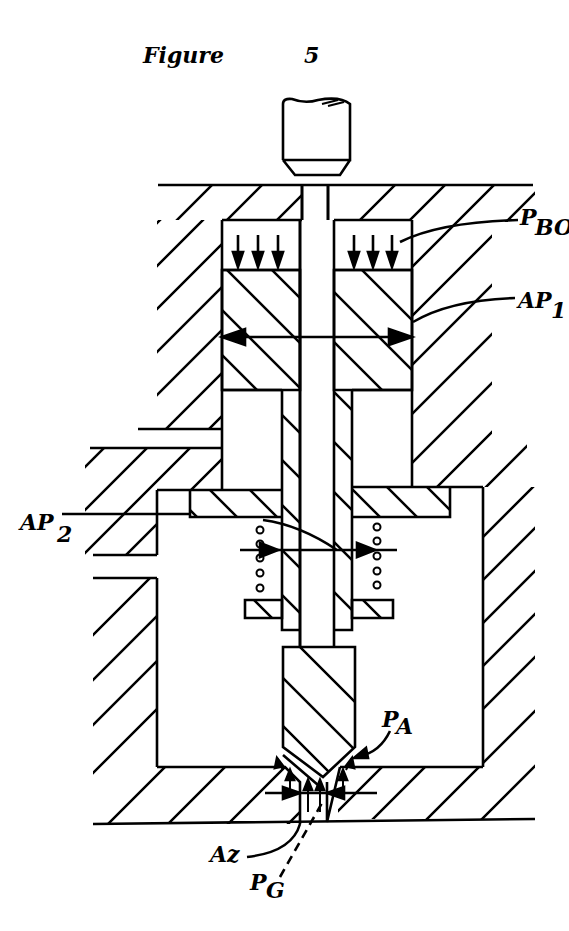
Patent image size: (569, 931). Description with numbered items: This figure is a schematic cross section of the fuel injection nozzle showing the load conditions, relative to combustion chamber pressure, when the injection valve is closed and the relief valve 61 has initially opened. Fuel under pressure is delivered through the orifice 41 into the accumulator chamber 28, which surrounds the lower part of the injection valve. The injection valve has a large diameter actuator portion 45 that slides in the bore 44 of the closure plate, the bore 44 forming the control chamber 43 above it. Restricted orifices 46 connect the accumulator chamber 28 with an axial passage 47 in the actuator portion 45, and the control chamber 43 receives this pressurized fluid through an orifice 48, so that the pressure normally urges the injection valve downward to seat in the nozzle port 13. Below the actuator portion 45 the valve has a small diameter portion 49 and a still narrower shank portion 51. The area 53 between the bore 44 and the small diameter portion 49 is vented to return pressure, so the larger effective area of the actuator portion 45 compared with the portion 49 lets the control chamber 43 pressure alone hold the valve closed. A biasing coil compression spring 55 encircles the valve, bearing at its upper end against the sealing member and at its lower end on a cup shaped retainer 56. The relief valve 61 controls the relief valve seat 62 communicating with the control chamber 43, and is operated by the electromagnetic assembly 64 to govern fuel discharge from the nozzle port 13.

The nozzle port 13 is at (327, 822).
The accumulator chamber 28 is at (443, 674).
The orifice 41 is at (117, 578).
The control chamber 43 is at (338, 254).
The bore 44 is at (228, 303).
The actuator portion 45 is at (447, 377).
The restricted orifices 46 is at (285, 645).
The axial passage 47 is at (295, 387).
The orifice 48 is at (297, 300).
The small diameter portion 49 is at (355, 470).
The shank portion 51 is at (283, 720).
The area 53 is at (268, 452).
The biasing coil compression spring 55 is at (385, 570).
The cup shaped retainer 56 is at (395, 610).
The relief valve 61 is at (352, 128).
The relief valve seat 62 is at (310, 207).
The electromagnetic assembly 64 is at (138, 429).